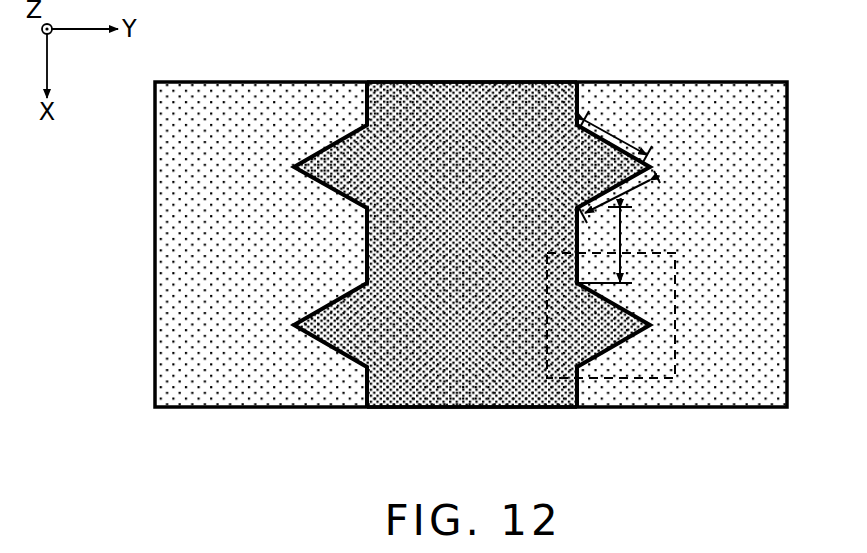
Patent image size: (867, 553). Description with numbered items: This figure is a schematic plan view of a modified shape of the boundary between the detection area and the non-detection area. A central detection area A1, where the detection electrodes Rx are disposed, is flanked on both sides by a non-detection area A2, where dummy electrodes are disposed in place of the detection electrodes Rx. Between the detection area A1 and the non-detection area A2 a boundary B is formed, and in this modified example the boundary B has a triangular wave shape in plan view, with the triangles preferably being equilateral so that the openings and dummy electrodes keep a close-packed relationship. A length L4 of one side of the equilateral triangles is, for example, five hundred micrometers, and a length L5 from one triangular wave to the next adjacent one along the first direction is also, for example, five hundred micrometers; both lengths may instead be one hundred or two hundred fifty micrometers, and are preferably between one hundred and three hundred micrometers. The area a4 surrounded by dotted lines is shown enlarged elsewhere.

The detection area A1 is at (367, 78).
The non-detection area A2 is at (155, 78).
The boundary B is at (367, 393).
The detection electrodes Rx is at (472, 392).
The area surrounded by dotted lines a4 is at (638, 379).
The length of one side of the equilateral triangles L4 is at (618, 133).
The distance between triangular waves L5 is at (620, 245).